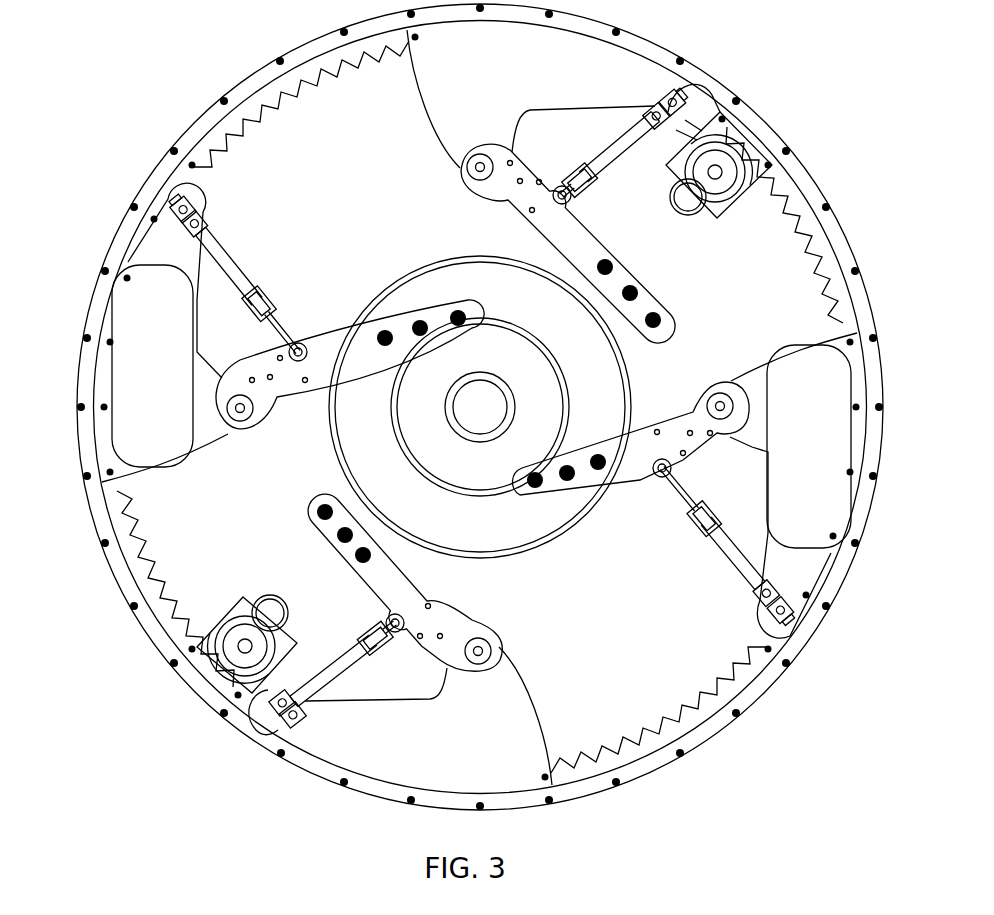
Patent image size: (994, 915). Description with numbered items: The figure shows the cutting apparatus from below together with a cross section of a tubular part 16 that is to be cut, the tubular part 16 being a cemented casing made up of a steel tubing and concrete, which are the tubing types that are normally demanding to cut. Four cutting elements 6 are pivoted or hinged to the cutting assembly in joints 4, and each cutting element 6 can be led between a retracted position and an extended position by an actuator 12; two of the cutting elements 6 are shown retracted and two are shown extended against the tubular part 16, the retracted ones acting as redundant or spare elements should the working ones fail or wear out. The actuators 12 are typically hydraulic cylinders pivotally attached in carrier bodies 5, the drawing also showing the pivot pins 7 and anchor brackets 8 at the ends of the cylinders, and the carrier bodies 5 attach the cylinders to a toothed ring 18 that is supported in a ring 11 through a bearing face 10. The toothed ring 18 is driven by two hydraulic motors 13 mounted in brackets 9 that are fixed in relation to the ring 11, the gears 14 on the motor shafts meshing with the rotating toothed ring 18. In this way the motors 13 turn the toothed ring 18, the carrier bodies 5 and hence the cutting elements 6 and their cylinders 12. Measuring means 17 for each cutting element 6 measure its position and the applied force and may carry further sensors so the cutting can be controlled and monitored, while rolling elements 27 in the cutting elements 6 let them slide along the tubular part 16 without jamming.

The joint 4 is at (466, 170).
The carrier body 5 is at (420, 92).
The cutting element 6 is at (508, 202).
The pivot pin 7 is at (561, 186).
The actuator anchor bracket 8 is at (678, 96).
The bracket 9 is at (722, 222).
The bearing face 10 is at (228, 98).
The ring 11 is at (106, 563).
The actuator 12 is at (615, 170).
The hydraulic motor 13 is at (686, 218).
The gear 14 is at (770, 163).
The tubular part 16 is at (630, 346).
The measuring means 17 is at (138, 265).
The toothed ring 18 is at (142, 547).
The rolling element 27 is at (661, 319).